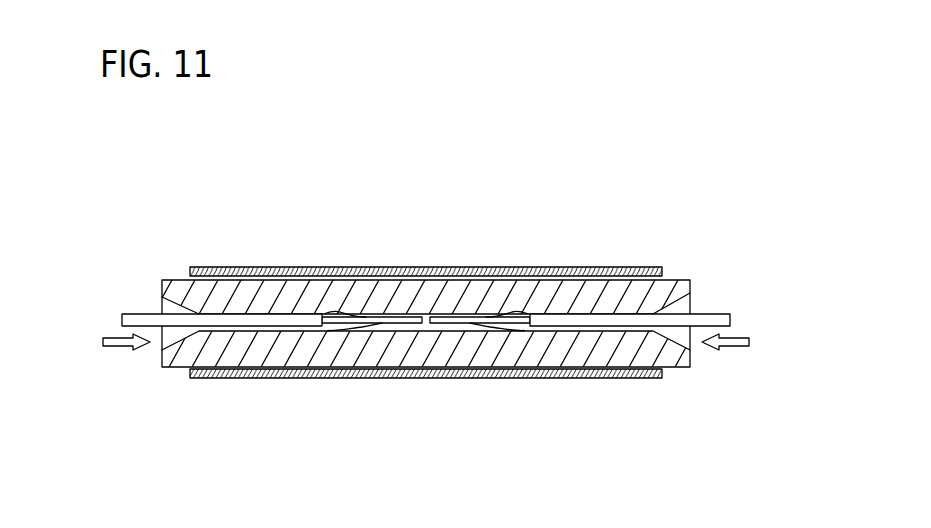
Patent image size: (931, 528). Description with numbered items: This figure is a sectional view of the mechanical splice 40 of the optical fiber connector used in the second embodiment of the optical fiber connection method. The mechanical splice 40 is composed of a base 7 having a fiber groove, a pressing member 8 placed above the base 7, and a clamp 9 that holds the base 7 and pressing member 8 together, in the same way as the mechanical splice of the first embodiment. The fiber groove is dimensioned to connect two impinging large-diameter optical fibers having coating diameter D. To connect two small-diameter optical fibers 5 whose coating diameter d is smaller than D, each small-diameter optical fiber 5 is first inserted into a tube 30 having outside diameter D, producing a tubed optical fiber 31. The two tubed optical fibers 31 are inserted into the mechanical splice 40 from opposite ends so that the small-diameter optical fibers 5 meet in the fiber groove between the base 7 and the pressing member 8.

The small-diameter optical fiber 5 is at (378, 317).
The base 7 is at (435, 350).
The pressing member 8 is at (432, 292).
The clamp 9 is at (493, 378).
The tube 30 is at (260, 318).
The tubed optical fiber 31 is at (138, 310).
The mechanical splice 40 is at (600, 167).